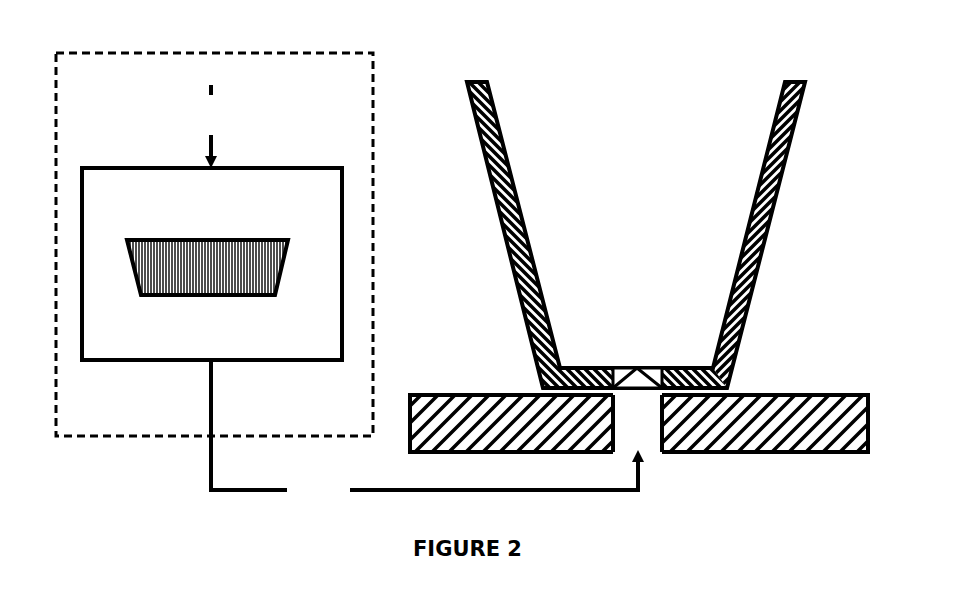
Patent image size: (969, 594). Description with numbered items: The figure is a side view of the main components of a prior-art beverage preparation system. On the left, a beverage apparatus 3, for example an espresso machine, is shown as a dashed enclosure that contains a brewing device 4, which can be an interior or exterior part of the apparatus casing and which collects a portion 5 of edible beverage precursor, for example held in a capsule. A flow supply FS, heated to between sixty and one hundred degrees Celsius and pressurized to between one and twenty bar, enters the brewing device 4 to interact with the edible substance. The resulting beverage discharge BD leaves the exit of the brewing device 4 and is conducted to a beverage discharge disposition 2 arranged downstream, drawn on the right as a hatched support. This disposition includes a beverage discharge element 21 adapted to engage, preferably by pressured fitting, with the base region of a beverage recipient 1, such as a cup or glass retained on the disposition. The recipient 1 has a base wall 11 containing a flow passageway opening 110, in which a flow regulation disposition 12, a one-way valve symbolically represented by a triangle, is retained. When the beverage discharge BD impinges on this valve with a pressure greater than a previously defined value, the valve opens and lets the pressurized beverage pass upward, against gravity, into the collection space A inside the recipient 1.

The beverage recipient 1 is at (597, 220).
The beverage discharge disposition 2 is at (630, 410).
The beverage apparatus 3 is at (214, 233).
The brewing device 4 is at (212, 252).
The portion of edible substance 5 is at (207, 258).
The base wall 11 is at (586, 358).
The flow passageway opening 110 is at (620, 358).
The flow regulation disposition 12 is at (640, 366).
The beverage discharge element 21 is at (659, 464).
The collection space A is at (637, 219).
The flow supply FS is at (210, 126).
The beverage discharge BD is at (427, 430).